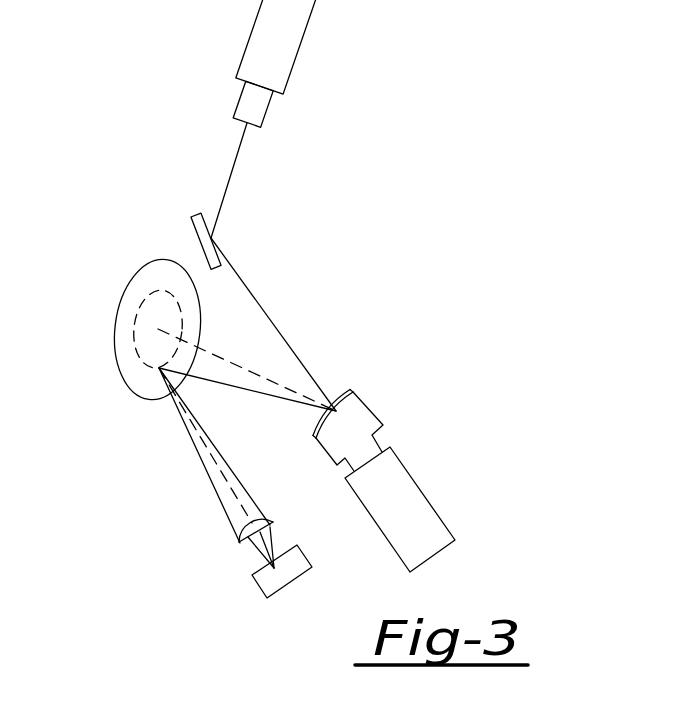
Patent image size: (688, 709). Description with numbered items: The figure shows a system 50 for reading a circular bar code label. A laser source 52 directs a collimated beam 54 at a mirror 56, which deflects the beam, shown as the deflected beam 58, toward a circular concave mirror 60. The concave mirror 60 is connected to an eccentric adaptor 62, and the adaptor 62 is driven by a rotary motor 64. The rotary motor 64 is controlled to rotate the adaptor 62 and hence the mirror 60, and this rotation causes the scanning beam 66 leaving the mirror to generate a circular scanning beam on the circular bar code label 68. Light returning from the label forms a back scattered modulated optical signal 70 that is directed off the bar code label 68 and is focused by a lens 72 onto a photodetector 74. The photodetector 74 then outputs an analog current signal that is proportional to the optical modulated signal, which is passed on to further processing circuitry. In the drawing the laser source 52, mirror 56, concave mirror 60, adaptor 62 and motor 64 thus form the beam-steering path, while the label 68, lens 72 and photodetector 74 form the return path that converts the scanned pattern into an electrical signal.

The system 50 is at (497, 566).
The laser source 52 is at (306, 32).
The collimated beam 54 is at (234, 163).
The mirror 56 is at (195, 230).
The deflected beam 58 is at (243, 282).
The circular concave mirror 60 is at (348, 389).
The eccentric adaptor 62 is at (360, 423).
The rotary motor 64 is at (412, 496).
The scanning beam 66 is at (226, 387).
The circular bar code label 68 is at (128, 312).
The back scattered modulated optical signal 70 is at (217, 493).
The lens 72 is at (240, 548).
The photodetector 74 is at (293, 567).